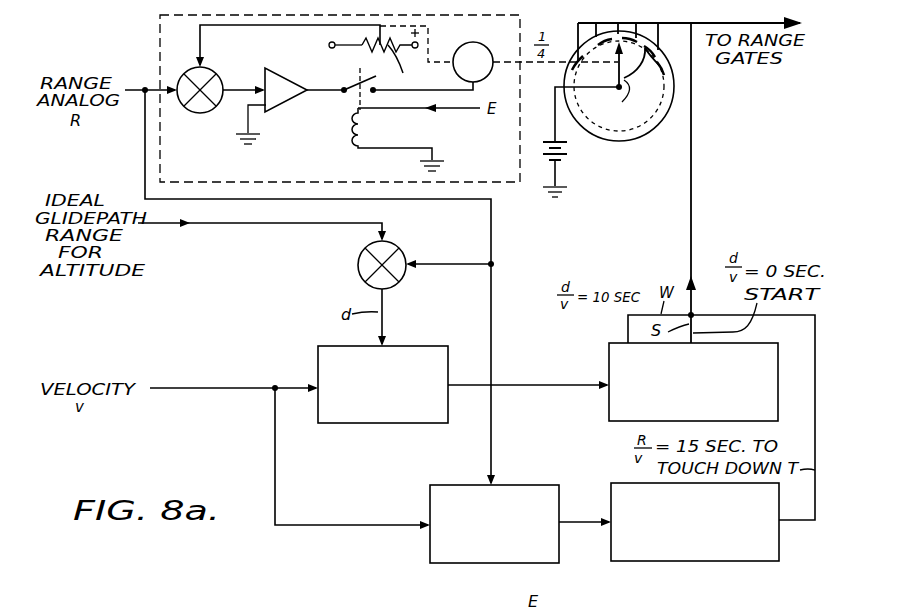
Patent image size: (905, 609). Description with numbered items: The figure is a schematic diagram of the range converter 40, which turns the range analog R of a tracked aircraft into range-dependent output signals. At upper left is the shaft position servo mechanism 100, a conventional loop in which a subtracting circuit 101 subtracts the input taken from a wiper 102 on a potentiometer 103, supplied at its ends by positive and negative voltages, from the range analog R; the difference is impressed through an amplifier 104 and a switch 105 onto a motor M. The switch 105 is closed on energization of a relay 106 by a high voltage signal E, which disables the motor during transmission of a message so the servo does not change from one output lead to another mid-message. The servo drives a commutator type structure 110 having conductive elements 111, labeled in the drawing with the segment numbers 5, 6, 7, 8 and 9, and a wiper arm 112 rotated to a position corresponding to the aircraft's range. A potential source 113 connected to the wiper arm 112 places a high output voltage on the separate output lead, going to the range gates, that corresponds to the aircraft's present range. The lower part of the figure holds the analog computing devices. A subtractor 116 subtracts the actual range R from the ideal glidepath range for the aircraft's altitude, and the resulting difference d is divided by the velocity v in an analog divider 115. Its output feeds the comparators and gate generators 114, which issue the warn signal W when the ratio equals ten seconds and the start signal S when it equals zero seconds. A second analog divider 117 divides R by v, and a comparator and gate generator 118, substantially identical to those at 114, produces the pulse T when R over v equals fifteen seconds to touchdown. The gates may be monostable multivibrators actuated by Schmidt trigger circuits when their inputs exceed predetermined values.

The range gate generating system 40 is at (240, 421).
The shaft position servo mechanism 100 is at (526, 184).
The subtracting circuit 101 is at (215, 75).
The wiper 102 is at (378, 40).
The potentiometer 103 is at (411, 66).
The amplifier 104 is at (287, 101).
The switch 105 is at (348, 84).
The relay 106 is at (375, 125).
The commutator type structure 110 is at (680, 91).
The conductive elements 111 is at (643, 75).
The wiper arm 112 is at (612, 78).
The potential source 113 is at (566, 156).
The comparators and gate generators 114 is at (609, 410).
The analog divider 115 is at (425, 346).
The subtractor 116 is at (358, 268).
The analog divider 117 is at (446, 484).
The comparator and gate generator 118 is at (609, 551).
The switch contact 5 is at (668, 58).
The switch contact 6 is at (649, 40).
The switch contact 7 is at (631, 33).
The switch contact 8 is at (605, 34).
The switch contact 9 is at (581, 53).